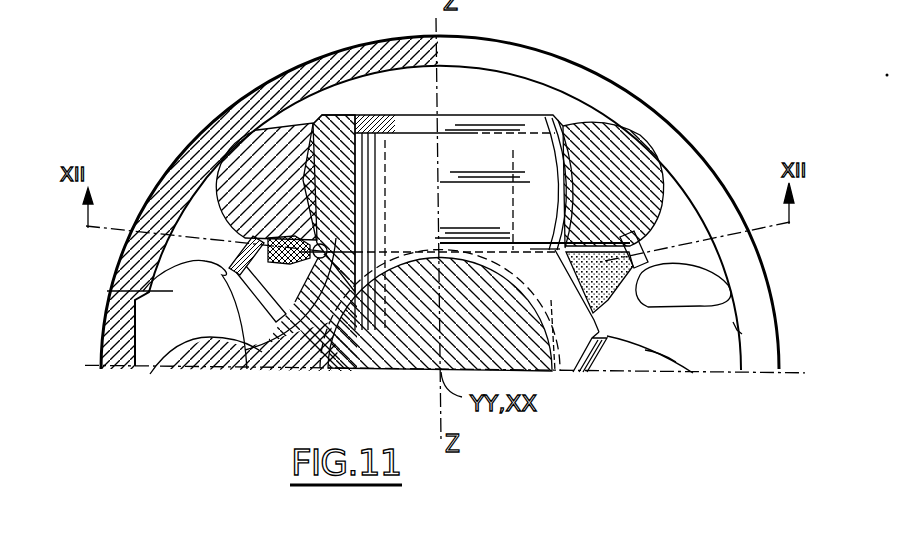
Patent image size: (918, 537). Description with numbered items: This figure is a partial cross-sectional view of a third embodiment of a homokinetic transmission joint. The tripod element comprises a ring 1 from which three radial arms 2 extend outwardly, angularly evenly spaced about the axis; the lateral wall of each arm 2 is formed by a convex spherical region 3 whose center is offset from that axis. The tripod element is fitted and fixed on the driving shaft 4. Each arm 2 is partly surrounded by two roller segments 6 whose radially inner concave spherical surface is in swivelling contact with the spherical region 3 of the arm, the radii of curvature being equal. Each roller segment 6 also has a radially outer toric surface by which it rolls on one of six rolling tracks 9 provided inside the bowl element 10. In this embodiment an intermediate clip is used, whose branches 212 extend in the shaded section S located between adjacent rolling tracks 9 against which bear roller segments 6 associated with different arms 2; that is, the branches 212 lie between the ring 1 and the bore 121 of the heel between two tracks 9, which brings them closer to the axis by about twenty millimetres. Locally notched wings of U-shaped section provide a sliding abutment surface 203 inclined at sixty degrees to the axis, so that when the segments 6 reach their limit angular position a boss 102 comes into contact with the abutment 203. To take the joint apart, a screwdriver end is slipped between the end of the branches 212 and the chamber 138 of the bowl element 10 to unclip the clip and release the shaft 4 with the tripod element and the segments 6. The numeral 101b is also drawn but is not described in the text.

The ring 1 is at (577, 306).
The radial arm 2 is at (396, 106).
The convex spherical region 3 is at (612, 146).
The driving shaft 4 is at (383, 343).
The roller segment 6 is at (222, 187).
The rolling track 9 is at (695, 276).
The bowl element 10 is at (232, 102).
The threaded bore 101b is at (469, 148).
The boss 102 is at (262, 276).
The bore of the heel 121 is at (195, 190).
The chamber of the bowl element 138 is at (645, 252).
The sliding abutment surface 203 is at (247, 370).
The branches of the clip 212 is at (107, 291).
The section S is at (618, 302).